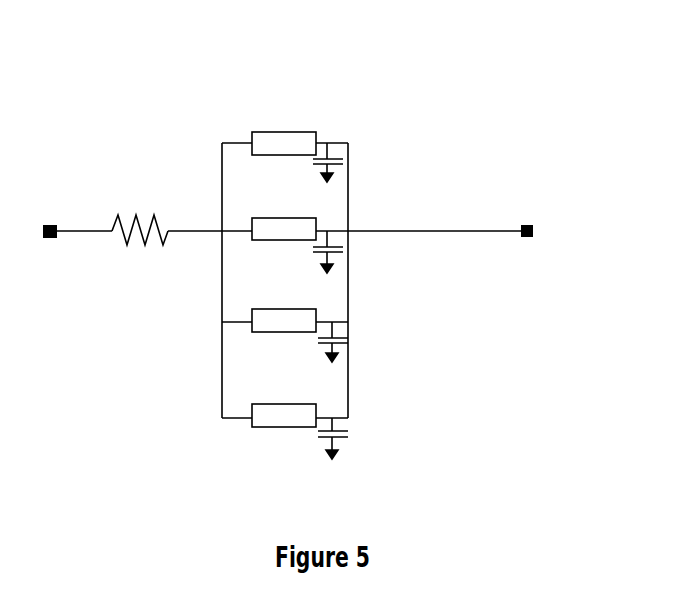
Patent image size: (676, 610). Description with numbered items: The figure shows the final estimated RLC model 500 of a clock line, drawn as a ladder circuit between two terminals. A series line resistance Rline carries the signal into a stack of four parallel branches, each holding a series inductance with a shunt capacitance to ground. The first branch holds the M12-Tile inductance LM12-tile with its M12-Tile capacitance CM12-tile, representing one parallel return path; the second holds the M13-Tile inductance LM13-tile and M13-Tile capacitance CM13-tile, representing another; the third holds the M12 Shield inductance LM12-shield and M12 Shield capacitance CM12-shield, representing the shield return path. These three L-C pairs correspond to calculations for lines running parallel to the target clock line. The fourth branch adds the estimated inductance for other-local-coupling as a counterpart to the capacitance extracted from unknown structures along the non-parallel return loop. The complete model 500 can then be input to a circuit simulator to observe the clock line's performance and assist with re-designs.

The RLC model 500 is at (469, 107).
The line resistance Rline is at (140, 206).
The M12-Tile inductance LM12-tile is at (285, 121).
The M12-Tile capacitance CM12-tile is at (375, 159).
The M13-Tile inductance LM13-tile is at (285, 206).
The M13-Tile capacitance CM13-tile is at (368, 257).
The M12 Shield inductance LM12-shield is at (285, 302).
The M12 Shield capacitance CM12-shield is at (383, 346).